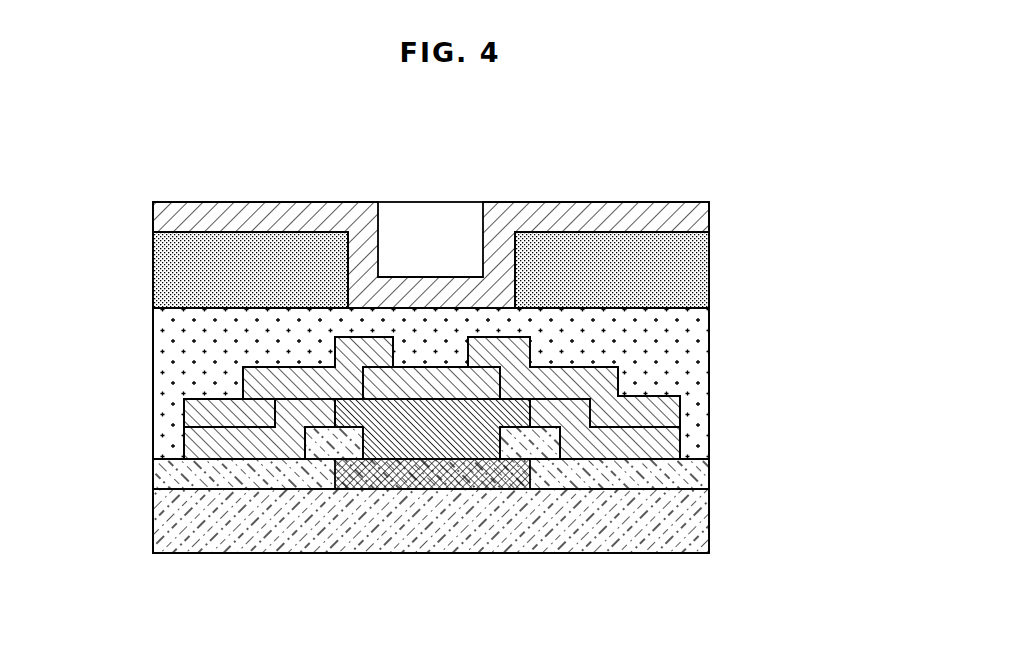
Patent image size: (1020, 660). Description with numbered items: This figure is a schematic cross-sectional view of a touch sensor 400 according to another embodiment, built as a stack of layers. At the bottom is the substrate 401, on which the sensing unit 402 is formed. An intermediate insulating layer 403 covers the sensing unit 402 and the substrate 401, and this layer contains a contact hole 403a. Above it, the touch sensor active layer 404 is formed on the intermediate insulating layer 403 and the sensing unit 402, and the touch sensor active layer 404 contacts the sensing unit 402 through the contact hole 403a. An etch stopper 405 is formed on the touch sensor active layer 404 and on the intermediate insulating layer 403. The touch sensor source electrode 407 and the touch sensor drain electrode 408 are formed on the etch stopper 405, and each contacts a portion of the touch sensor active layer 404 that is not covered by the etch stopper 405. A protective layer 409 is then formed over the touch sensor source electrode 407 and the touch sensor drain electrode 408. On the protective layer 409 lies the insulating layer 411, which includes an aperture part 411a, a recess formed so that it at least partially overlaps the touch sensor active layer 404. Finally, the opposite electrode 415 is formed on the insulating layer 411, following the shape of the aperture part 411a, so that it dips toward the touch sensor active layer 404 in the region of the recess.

The touch sensor 400 is at (638, 156).
The substrate 401 is at (697, 516).
The sensing unit 402 is at (475, 378).
The intermediate insulating layer 403 is at (697, 472).
The contact hole 403a is at (366, 445).
The touch sensor active layer 404 is at (425, 438).
The etch stopper 405 is at (490, 443).
The touch sensor source electrode 407 is at (197, 414).
The touch sensor drain electrode 408 is at (670, 410).
The protective layer 409 is at (698, 345).
The insulating layer 411 is at (167, 268).
The aperture part 411a is at (350, 257).
The opposite electrode 415 is at (698, 215).